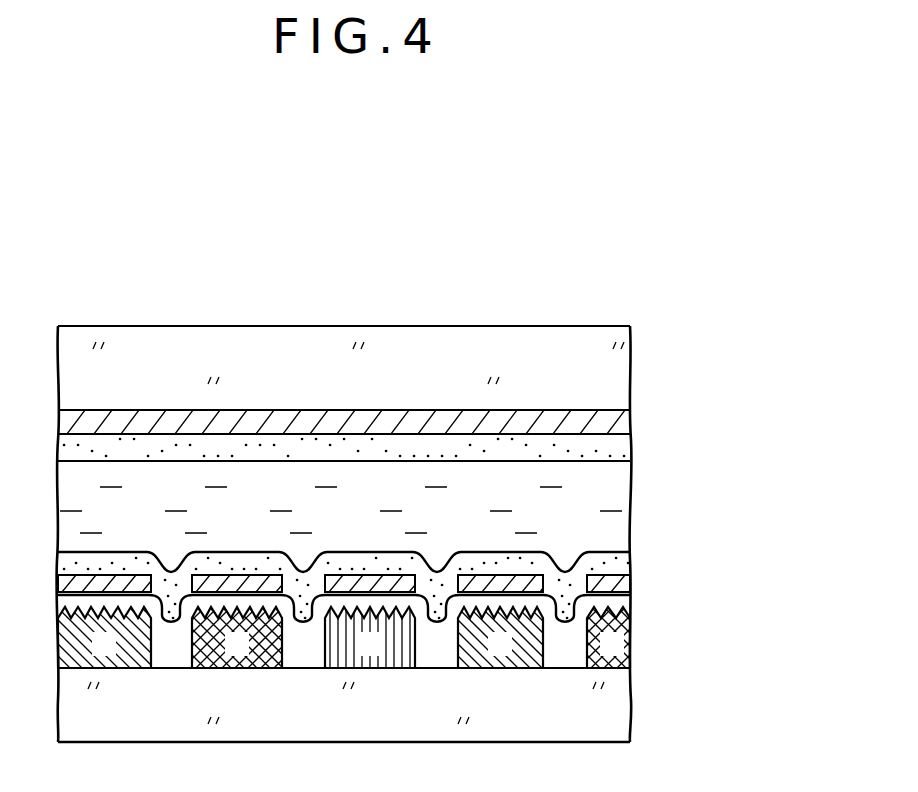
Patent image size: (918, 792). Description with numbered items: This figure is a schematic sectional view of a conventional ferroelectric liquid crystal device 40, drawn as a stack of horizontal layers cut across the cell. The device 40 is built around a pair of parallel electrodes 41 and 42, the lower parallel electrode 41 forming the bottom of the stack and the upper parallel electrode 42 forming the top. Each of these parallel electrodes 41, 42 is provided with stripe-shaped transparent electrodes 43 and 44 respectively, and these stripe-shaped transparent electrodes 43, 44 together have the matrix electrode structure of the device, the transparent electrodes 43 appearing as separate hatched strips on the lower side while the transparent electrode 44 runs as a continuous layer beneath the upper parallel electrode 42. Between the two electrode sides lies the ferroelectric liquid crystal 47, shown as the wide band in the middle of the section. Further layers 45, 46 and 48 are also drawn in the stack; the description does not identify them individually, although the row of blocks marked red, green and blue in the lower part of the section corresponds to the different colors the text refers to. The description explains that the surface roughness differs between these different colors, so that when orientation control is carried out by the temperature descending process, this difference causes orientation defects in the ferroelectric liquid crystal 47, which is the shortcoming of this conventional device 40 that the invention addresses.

The ferroelectric liquid crystal device 40 is at (562, 321).
The parallel electrode 41 is at (618, 716).
The parallel electrode 42 is at (621, 363).
The stripe-shaped transparent electrode 43 is at (628, 586).
The stripe-shaped transparent electrode 44 is at (622, 420).
The protective overcoat layer 45 is at (627, 560).
The alignment layer 46 is at (622, 458).
The ferroelectric liquid crystal 47 is at (625, 510).
The color filter layer 48 is at (622, 605).